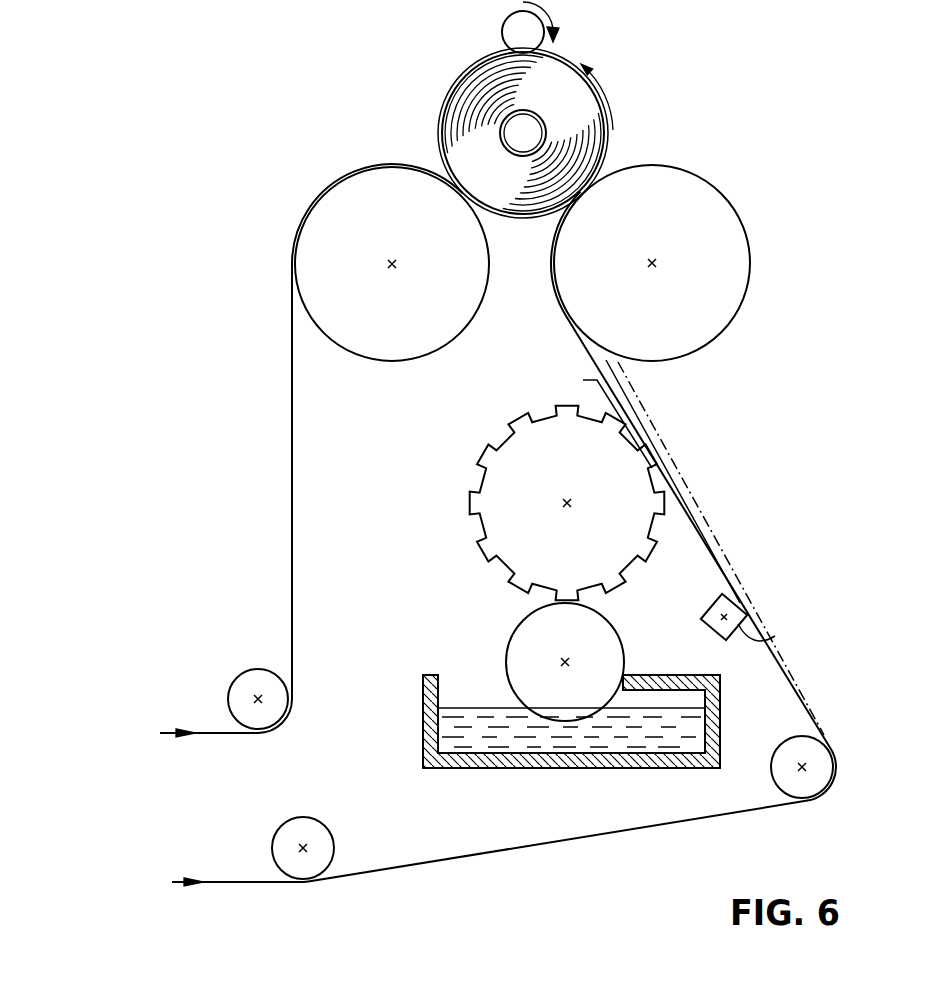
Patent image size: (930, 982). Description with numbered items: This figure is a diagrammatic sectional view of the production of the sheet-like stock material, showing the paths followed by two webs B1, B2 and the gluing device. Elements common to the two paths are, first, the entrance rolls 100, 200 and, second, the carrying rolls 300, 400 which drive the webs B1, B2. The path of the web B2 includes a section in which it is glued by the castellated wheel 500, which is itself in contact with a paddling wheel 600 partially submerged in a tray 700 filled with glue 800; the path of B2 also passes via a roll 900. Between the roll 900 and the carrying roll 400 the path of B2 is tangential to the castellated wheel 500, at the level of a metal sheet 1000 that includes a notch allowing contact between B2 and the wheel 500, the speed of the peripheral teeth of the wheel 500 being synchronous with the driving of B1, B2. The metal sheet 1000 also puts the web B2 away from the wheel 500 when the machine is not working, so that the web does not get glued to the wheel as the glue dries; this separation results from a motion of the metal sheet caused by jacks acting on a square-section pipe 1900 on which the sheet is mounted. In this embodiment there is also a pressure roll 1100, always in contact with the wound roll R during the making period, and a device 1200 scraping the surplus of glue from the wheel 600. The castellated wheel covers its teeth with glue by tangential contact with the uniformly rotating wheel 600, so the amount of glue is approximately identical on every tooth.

The entrance roll 100 is at (228, 699).
The entrance roll 200 is at (272, 848).
The carrying roll 300 is at (378, 234).
The carrying roll 400 is at (638, 232).
The castellated wheel 500 is at (510, 512).
The paddling wheel 600 is at (553, 648).
The tray 700 is at (423, 712).
The glue 800 is at (497, 708).
The roll 900 is at (780, 746).
The metal sheet 1000 is at (707, 542).
The pressure roll 1100 is at (503, 31).
The scraping device 1200 is at (643, 675).
The square-section pipe 1900 is at (775, 636).
The web B1 is at (211, 737).
The web B2 is at (228, 884).
The wound roll R is at (579, 64).